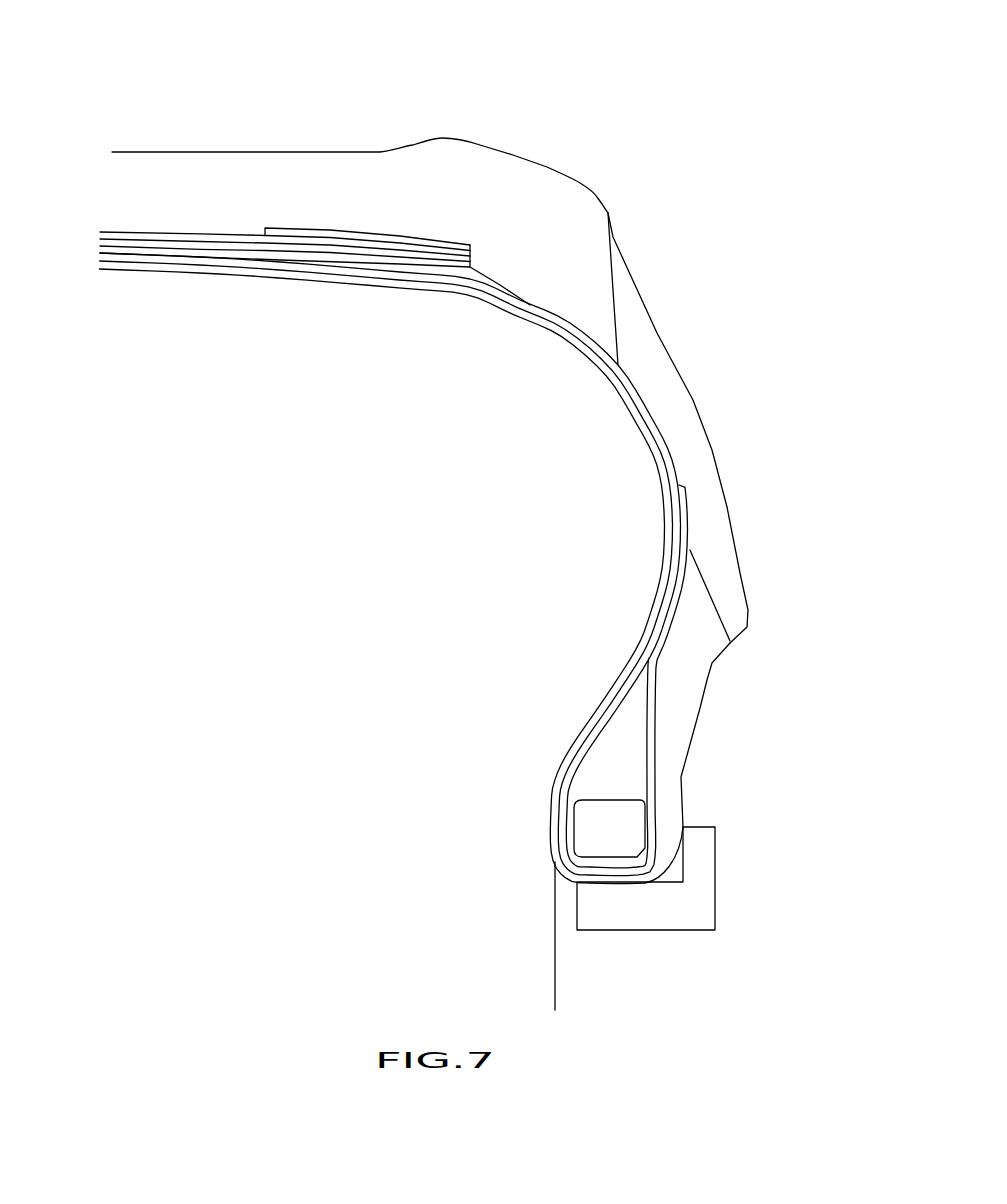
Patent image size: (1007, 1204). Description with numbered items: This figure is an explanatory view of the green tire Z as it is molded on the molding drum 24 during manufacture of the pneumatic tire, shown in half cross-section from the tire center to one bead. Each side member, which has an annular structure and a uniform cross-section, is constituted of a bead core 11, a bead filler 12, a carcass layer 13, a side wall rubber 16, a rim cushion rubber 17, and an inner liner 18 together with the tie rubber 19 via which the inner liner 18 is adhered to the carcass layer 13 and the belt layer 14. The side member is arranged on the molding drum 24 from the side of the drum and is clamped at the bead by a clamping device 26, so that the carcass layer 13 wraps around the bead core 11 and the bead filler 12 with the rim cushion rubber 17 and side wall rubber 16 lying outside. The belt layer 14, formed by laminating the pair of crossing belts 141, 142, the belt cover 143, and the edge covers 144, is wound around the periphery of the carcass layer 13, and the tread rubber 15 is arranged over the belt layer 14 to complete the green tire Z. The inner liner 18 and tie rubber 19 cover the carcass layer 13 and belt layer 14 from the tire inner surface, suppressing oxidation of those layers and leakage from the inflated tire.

The green tire Z is at (543, 104).
The bead core 11 is at (627, 818).
The bead filler 12 is at (630, 762).
The carcass layer 13 is at (477, 292).
The belt layer 14 is at (290, 63).
The crossing belt 141 is at (153, 245).
The crossing belt 142 is at (205, 243).
The belt cover 143 is at (240, 242).
The edge cover 144 is at (302, 237).
The tread rubber 15 is at (598, 212).
The side wall rubber 16 is at (713, 452).
The rim cushion rubber 17 is at (680, 708).
The inner liner 18 is at (391, 576).
The tie rubber 19 is at (558, 343).
The molding drum 24 is at (557, 965).
The clamping device 26 is at (717, 880).